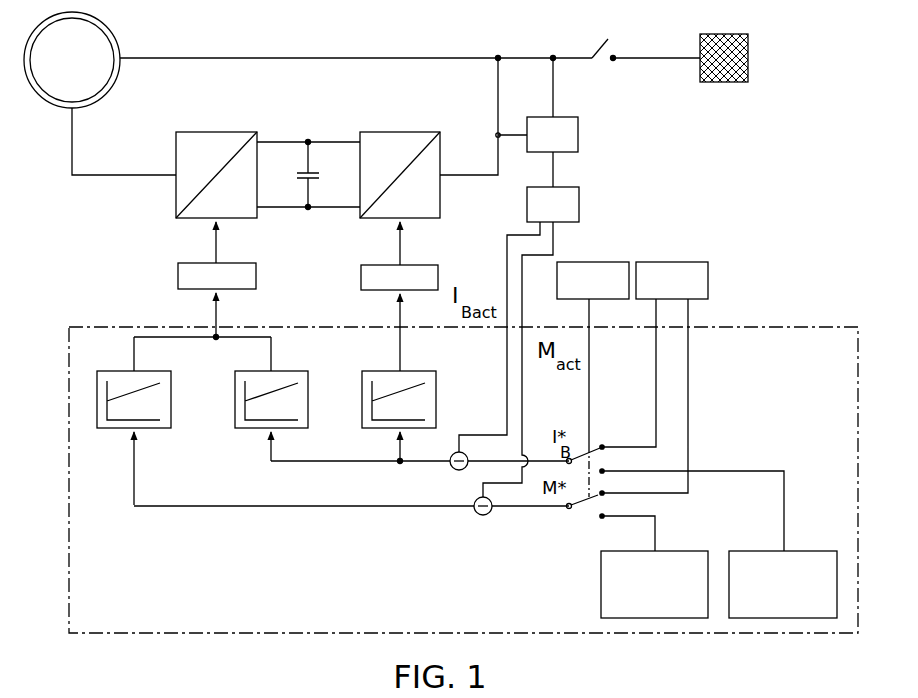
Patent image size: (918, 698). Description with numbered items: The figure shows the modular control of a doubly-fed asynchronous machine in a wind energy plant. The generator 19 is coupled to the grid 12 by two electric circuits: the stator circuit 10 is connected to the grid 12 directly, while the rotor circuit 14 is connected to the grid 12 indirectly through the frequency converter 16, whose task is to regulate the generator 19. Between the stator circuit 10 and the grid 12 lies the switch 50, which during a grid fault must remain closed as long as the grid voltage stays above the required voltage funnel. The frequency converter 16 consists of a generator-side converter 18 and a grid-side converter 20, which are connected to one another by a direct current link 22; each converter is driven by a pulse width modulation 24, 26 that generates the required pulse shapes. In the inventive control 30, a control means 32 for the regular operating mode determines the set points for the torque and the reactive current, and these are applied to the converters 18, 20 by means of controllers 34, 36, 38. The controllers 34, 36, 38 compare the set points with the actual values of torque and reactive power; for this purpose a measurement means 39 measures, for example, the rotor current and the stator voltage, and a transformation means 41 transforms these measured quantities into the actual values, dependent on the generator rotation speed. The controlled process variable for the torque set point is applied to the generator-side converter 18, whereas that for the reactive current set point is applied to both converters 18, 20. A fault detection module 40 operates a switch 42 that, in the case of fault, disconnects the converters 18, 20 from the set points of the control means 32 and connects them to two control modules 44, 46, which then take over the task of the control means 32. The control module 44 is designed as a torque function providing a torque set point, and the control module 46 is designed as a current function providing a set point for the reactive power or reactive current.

The stator circuit 10 is at (122, 55).
The grid 12 is at (749, 62).
The rotor circuit 14 is at (103, 88).
The frequency converter 16 is at (308, 162).
The generator-side converter 18 is at (216, 132).
The generator 19 is at (55, 112).
The grid-side converter 20 is at (401, 132).
The direct current link 22 is at (278, 207).
The pulse width modulation 24 is at (361, 276).
The pulse width modulation 26 is at (178, 276).
The control 30 is at (317, 628).
The control means 32 is at (673, 262).
The controller 34 is at (152, 428).
The controller 36 is at (292, 371).
The controller 38 is at (420, 371).
The measurement means 39 is at (579, 135).
The fault detection module 40 is at (598, 262).
The transformation means 41 is at (579, 205).
The switch 42 is at (585, 523).
The control module 44 is at (677, 551).
The control module 46 is at (805, 551).
The switch 50 is at (590, 46).